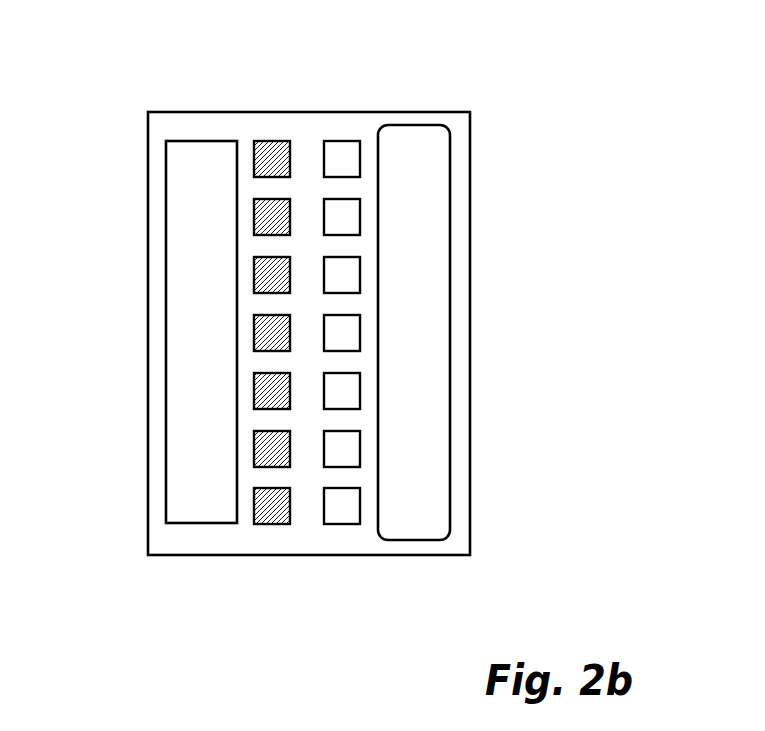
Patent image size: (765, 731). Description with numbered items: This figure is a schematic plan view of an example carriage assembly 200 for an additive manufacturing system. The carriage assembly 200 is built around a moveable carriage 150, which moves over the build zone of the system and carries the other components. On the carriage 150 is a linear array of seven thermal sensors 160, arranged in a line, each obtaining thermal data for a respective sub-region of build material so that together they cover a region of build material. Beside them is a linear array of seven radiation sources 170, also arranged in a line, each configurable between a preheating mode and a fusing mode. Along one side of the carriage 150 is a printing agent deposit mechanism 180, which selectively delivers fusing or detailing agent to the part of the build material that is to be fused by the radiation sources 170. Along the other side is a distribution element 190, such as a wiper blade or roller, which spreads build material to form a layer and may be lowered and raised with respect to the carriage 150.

The carriage assembly 200 is at (145, 65).
The moveable carriage 150 is at (307, 112).
The thermal sensors 160 is at (270, 524).
The radiation sources 170 is at (340, 524).
The printing agent deposit mechanism 180 is at (167, 333).
The distribution element 190 is at (450, 332).